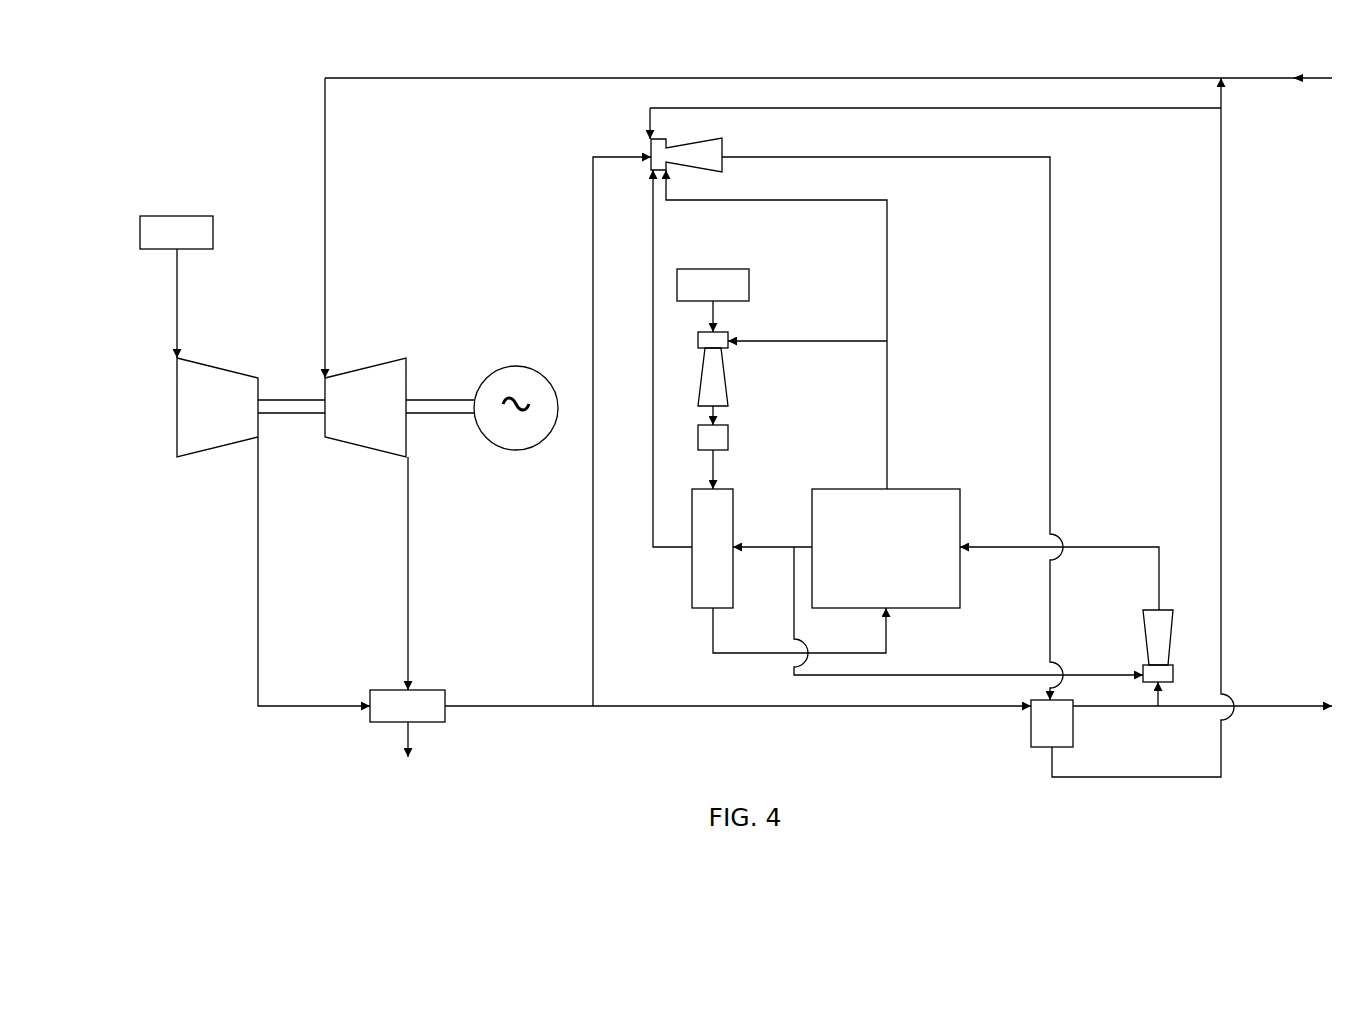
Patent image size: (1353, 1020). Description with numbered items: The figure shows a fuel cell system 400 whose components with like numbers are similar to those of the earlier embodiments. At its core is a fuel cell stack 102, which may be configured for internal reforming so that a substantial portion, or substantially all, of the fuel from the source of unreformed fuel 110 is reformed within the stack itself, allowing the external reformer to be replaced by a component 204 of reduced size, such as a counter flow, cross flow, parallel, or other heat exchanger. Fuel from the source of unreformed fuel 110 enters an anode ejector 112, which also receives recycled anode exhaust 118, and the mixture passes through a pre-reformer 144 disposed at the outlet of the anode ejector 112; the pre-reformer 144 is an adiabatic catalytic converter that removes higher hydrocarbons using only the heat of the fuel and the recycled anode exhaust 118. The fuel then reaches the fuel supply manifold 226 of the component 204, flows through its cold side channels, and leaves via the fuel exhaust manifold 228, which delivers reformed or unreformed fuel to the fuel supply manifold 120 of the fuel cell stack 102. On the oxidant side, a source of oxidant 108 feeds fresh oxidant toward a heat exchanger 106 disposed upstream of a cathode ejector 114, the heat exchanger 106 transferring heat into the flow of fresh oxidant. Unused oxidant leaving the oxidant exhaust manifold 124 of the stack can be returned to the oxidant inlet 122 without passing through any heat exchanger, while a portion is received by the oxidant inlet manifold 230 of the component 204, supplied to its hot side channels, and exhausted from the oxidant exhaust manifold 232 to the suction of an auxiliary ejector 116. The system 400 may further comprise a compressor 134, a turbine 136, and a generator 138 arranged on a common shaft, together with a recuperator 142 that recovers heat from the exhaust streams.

The fuel cell system 400 is at (140, 105).
The fuel cell stack 102 is at (871, 557).
The heat exchanger 106 is at (1037, 736).
The source of oxidant 108 is at (162, 241).
The source of unreformed fuel 110 is at (698, 294).
The anode ejector 112 is at (711, 387).
The cathode ejector 114 is at (1157, 628).
The auxiliary ejector 116 is at (698, 153).
The anode exhaust 118 is at (893, 478).
The fuel supply manifold 120 is at (900, 613).
The oxidant inlet 122 is at (968, 537).
The oxidant exhaust manifold 124 is at (807, 540).
The compressor 134 is at (192, 417).
The turbine 136 is at (350, 417).
The generator 138 is at (501, 440).
The recuperator 142 is at (392, 715).
The pre-reformer 144 is at (715, 437).
The component 204 is at (697, 557).
The fuel supply manifold 226 is at (700, 483).
The fuel exhaust manifold 228 is at (705, 617).
The oxidant inlet manifold 230 is at (740, 558).
The oxidant exhaust manifold 232 is at (683, 557).